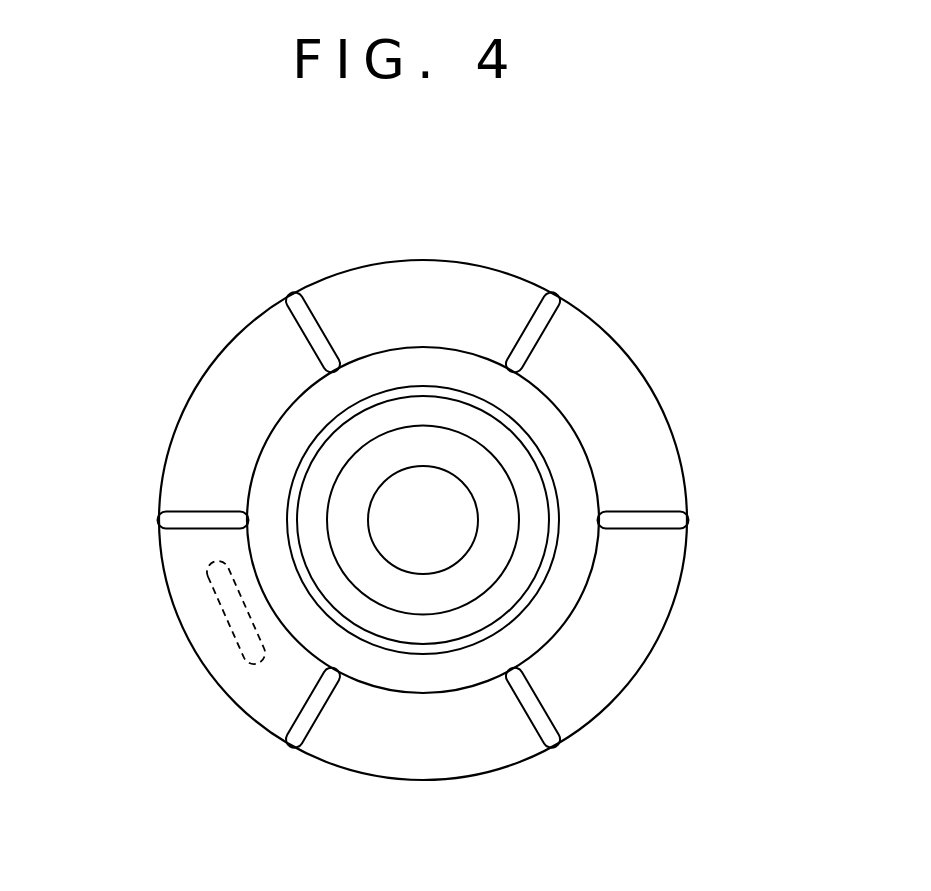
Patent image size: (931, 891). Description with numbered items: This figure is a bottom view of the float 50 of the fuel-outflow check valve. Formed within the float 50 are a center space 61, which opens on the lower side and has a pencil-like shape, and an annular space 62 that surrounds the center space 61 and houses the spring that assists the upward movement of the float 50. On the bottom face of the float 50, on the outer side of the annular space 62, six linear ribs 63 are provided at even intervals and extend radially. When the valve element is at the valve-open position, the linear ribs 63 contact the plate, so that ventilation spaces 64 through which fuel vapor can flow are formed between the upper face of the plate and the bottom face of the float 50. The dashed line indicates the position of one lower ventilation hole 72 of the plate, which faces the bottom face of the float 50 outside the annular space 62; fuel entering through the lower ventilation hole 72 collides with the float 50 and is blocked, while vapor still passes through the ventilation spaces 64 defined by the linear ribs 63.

The float 50 is at (618, 325).
The center space 61 is at (452, 547).
The annular space 62 is at (452, 670).
The linear ribs 63 is at (297, 302).
The ventilation spaces 64 is at (410, 292).
The lower ventilation hole 72 is at (222, 623).